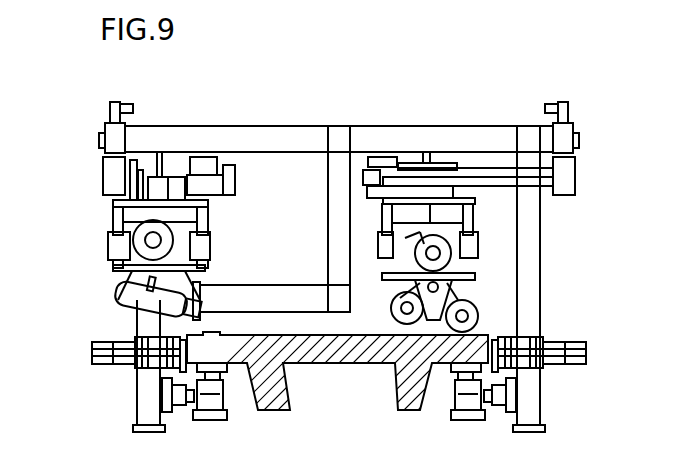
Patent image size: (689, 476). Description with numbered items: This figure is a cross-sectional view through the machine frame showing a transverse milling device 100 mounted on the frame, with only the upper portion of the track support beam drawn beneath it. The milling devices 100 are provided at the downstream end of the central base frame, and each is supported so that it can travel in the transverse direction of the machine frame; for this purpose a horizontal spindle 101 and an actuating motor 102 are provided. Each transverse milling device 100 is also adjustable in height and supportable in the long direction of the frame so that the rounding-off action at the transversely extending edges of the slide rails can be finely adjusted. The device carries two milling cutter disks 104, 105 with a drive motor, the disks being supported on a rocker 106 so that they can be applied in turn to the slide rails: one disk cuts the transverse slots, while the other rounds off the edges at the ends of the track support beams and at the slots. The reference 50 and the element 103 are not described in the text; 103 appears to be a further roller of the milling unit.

The frame 50 is at (308, 124).
The transverse milling device 100 is at (108, 279).
The horizontal spindle 101 is at (473, 177).
The actuating motor 102 is at (112, 133).
The upper roller 103 is at (447, 258).
The milling cutter disk 104 is at (462, 317).
The milling cutter disk 105 is at (405, 310).
The rocker 106 is at (140, 308).